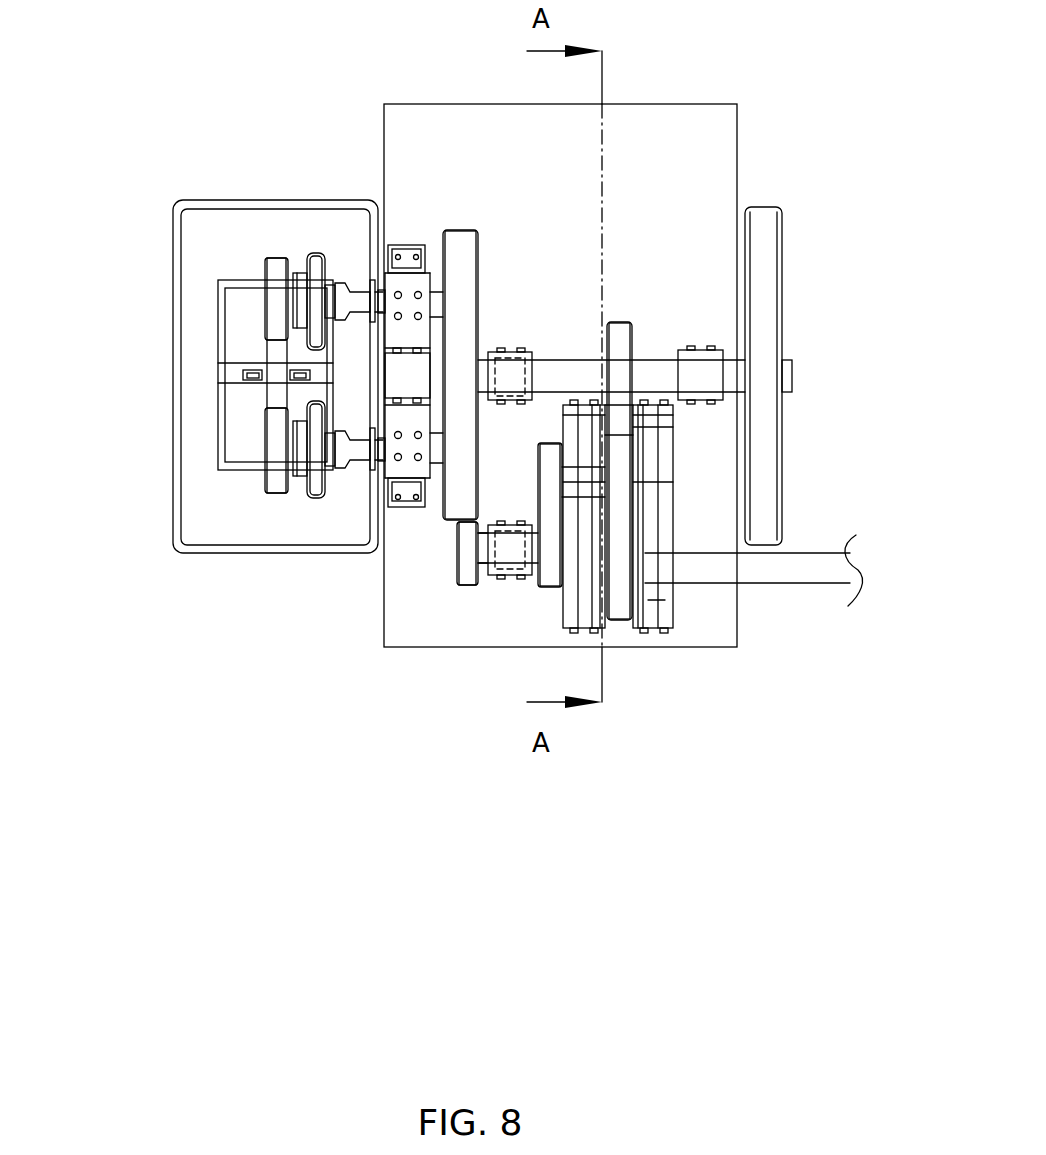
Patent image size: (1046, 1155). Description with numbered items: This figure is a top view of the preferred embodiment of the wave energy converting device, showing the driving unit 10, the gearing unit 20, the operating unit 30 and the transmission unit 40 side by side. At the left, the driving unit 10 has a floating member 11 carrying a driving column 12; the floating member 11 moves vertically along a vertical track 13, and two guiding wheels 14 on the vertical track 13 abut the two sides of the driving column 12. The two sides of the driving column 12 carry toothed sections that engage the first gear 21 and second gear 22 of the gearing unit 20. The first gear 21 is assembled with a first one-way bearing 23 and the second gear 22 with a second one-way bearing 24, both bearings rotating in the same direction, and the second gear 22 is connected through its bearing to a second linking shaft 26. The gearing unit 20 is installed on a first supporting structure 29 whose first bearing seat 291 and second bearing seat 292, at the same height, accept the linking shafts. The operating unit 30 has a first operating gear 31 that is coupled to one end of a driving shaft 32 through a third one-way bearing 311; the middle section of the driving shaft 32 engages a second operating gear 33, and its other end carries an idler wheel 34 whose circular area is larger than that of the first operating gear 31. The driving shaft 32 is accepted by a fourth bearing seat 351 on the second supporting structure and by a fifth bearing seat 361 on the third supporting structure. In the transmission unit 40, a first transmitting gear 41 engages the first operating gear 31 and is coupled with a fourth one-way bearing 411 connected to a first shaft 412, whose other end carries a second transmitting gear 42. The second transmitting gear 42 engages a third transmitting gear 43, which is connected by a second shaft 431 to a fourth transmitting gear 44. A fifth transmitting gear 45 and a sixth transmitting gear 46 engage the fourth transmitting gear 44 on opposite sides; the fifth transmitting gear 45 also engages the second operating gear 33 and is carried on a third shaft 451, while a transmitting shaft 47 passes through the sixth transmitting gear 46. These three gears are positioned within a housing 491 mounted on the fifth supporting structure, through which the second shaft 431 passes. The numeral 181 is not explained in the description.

The driving unit 10 is at (150, 288).
The floating member 11 is at (180, 432).
The driving column 12 is at (272, 395).
The vertical track 13 is at (222, 332).
The guiding wheels 14 is at (218, 372).
The gearing unit 20 is at (277, 522).
The first gear 21 is at (263, 478).
The second gear 22 is at (273, 262).
The first one-way bearing 23 is at (433, 455).
The second one-way bearing 24 is at (312, 268).
The second linking shaft 26 is at (438, 296).
The first supporting structure 29 is at (407, 375).
The first bearing seat 291 is at (407, 460).
The second bearing seat 292 is at (409, 256).
The operating unit 30 is at (802, 250).
The first operating gear 31 is at (458, 246).
The third one-way bearing 311 is at (510, 365).
The driving shaft 32 is at (654, 365).
The second operating gear 33 is at (620, 335).
The idler wheel 34 is at (758, 300).
The fourth bearing seat 351 is at (532, 358).
The fifth bearing seat 361 is at (700, 375).
The transmission unit 40 is at (627, 584).
The first transmitting gear 41 is at (465, 570).
The fourth one-way bearing 411 is at (510, 575).
The first shaft 412 is at (484, 542).
The second transmitting gear 42 is at (548, 580).
The third transmitting gear 43 is at (548, 455).
The second shaft 431 is at (640, 482).
The fourth transmitting gear 44 is at (640, 497).
The fifth transmitting gear 45 is at (630, 437).
The third shaft 451 is at (638, 427).
The sixth transmitting gear 46 is at (627, 590).
The transmitting shaft 47 is at (820, 565).
The housing 491 is at (655, 600).
The bearing base 181 is at (490, 578).